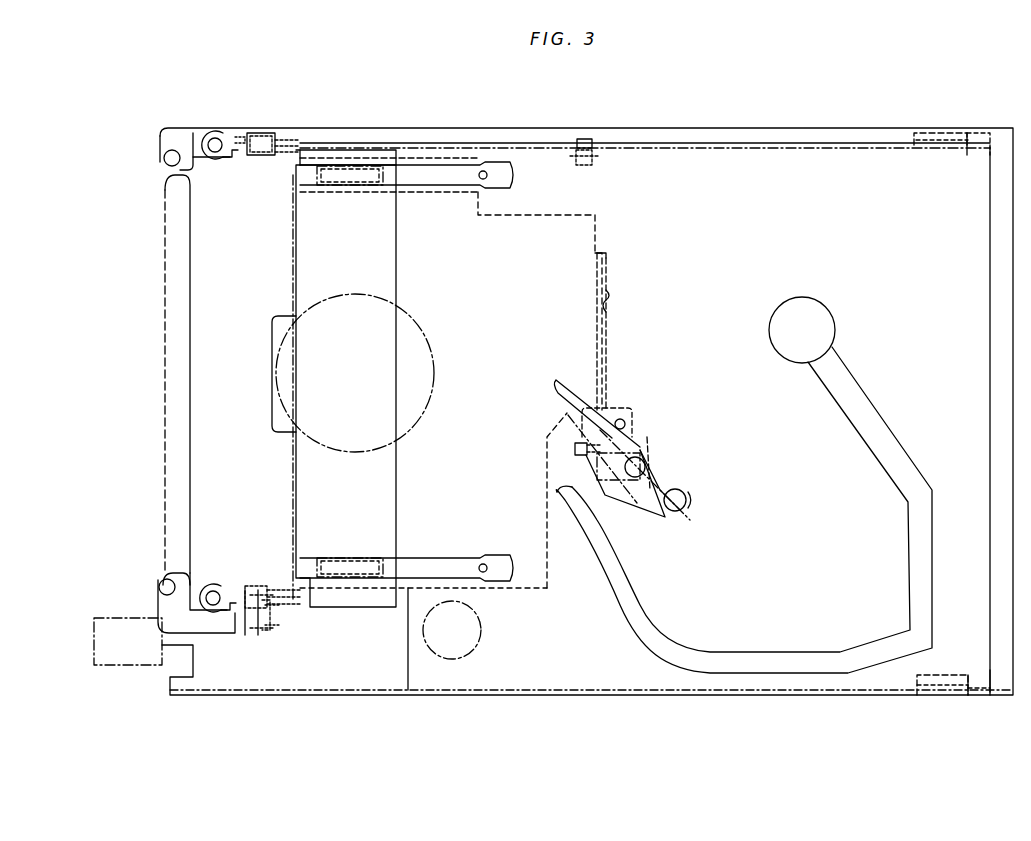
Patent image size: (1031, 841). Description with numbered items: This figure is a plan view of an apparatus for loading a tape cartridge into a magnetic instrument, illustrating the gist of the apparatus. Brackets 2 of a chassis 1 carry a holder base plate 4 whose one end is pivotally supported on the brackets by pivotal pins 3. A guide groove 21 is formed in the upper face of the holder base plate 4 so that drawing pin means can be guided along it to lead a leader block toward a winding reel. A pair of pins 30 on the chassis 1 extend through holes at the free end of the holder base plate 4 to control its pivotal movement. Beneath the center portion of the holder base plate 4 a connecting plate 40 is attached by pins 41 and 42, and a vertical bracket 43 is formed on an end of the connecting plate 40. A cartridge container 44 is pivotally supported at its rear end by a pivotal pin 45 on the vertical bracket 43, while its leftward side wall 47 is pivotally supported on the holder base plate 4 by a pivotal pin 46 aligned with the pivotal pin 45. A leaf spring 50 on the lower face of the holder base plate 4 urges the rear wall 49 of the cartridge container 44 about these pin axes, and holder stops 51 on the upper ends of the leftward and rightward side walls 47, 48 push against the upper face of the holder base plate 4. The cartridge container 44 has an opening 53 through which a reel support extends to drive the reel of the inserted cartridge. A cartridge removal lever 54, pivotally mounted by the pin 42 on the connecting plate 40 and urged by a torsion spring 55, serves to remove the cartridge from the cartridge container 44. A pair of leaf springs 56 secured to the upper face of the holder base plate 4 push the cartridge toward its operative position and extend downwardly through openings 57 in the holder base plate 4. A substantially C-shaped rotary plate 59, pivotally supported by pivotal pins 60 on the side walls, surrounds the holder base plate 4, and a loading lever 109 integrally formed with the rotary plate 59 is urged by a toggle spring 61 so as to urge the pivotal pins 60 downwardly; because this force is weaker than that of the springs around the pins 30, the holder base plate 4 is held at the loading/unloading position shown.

The chassis 1 is at (342, 675).
The brackets 2 is at (940, 130).
The pivotal pins 3 is at (995, 130).
The holder base plate 4 is at (978, 190).
The guide groove 21 is at (838, 382).
The pins 30 is at (222, 138).
The connecting plate 40 is at (686, 482).
The pin 41 is at (692, 498).
The pin 42 is at (649, 456).
The vertical bracket 43 is at (616, 447).
The cartridge container 44 is at (212, 256).
The pivotal pin 45 is at (583, 455).
The pivotal pin 46 is at (592, 137).
The leftward side wall 47 is at (570, 158).
The rightward side wall 48 is at (518, 588).
The rear wall 49 is at (604, 268).
The leaf spring 50 is at (612, 305).
The holder stops 51 is at (282, 138).
The opening 53 is at (434, 364).
The cartridge removal lever 54 is at (557, 395).
The torsion spring 55 is at (672, 474).
The leaf springs 56 is at (445, 182).
The openings 57 is at (348, 185).
The rotary plate 59 is at (386, 502).
The pivotal pins 60 is at (265, 634).
The toggle spring 61 is at (276, 628).
The loading lever 109 is at (112, 626).